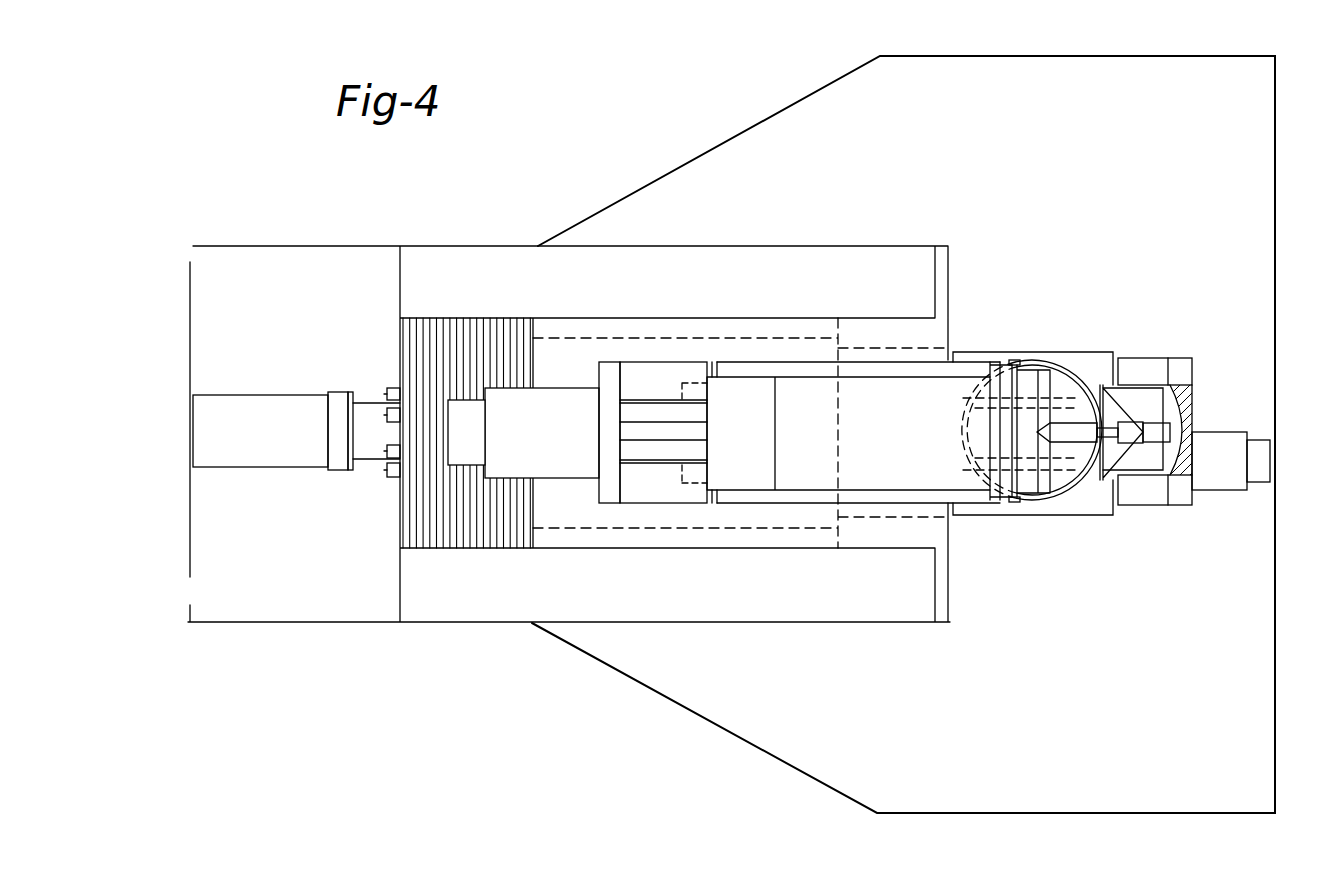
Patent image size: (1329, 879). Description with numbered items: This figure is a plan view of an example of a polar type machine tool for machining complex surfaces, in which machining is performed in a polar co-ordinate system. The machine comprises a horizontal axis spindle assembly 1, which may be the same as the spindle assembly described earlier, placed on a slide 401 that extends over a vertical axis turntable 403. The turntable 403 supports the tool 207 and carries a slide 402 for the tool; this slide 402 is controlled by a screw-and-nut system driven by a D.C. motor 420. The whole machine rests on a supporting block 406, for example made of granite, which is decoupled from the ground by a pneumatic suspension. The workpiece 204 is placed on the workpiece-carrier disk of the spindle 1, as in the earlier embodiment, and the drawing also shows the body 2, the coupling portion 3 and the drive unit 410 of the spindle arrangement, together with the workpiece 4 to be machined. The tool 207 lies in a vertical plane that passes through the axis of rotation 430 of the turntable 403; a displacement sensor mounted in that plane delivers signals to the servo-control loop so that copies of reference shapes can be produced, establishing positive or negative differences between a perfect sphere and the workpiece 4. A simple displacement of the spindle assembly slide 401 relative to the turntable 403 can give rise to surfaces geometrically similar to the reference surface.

The horizontal axis spindle assembly 1 is at (803, 392).
The cylinder body 2 is at (575, 460).
The coupling flange 3 is at (668, 380).
The workpiece 4 is at (468, 443).
The workpiece 204 is at (1028, 375).
The tool 207 is at (1068, 428).
The slide 401 is at (748, 592).
The slide 402 is at (1150, 368).
The vertical axis turntable 403 is at (1065, 493).
The supporting block 406 is at (1262, 152).
The drive motor 410 is at (263, 402).
The D.C. motor 420 is at (1228, 490).
The axis of rotation 430 is at (1037, 432).